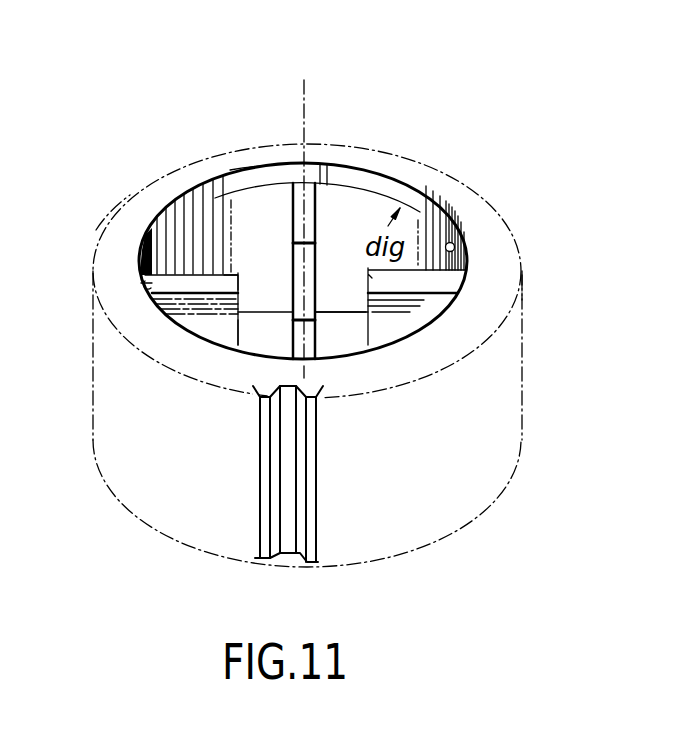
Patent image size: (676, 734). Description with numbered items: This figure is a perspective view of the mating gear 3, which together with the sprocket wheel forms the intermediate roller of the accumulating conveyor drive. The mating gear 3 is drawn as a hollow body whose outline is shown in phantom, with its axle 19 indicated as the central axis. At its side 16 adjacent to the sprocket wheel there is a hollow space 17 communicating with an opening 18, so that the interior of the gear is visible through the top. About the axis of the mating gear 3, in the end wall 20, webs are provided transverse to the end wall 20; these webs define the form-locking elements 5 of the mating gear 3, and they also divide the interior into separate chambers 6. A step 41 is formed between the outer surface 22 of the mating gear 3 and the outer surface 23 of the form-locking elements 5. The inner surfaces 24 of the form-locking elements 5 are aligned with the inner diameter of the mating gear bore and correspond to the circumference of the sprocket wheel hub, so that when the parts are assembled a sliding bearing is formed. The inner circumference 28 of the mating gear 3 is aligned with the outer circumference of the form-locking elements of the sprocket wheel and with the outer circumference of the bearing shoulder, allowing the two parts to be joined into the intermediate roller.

The mating gear 3 is at (492, 130).
The form-locking elements 5 is at (322, 183).
The chambers 6 is at (183, 227).
The side 16 is at (507, 283).
The hollow space 17 is at (214, 157).
The opening 18 is at (250, 192).
The axle 19 is at (303, 103).
The end wall 20 is at (330, 315).
The outer surface 22 is at (115, 225).
The outer surface of the form-locking elements 23 is at (224, 280).
The inner surfaces of the form-locking elements 24 is at (240, 331).
The inner circumference 28 is at (467, 233).
The step 41 is at (150, 290).